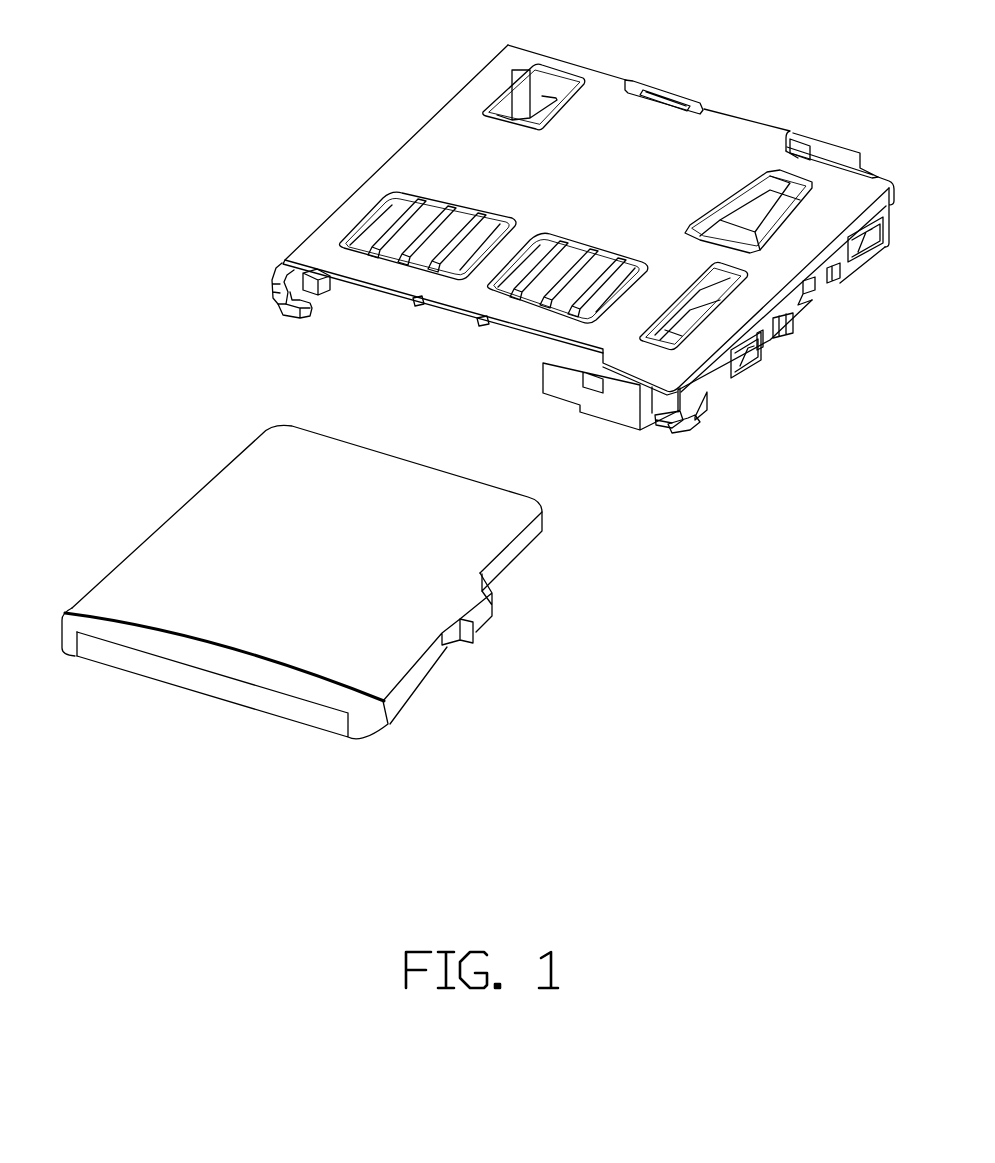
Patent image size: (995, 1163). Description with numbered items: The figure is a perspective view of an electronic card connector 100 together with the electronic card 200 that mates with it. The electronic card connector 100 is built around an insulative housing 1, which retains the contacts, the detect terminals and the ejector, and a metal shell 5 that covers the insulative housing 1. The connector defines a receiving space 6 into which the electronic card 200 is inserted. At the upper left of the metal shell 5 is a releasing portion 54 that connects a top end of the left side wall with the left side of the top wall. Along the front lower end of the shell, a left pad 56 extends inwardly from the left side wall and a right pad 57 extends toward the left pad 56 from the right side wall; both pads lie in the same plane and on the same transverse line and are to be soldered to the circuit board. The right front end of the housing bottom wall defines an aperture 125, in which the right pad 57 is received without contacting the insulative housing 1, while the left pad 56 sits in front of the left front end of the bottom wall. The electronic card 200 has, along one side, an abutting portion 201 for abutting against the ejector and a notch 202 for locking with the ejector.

The electronic card connector 100 is at (340, 133).
The metal shell 5 is at (690, 140).
The insulative housing 1 is at (623, 402).
The aperture 125 is at (660, 418).
The right pad 57 is at (670, 428).
The releasing portion 54 is at (300, 270).
The left pad 56 is at (290, 314).
The receiving space 6 is at (353, 294).
The electronic card 200 is at (148, 495).
The abutting portion 201 is at (495, 592).
The notch 202 is at (457, 648).